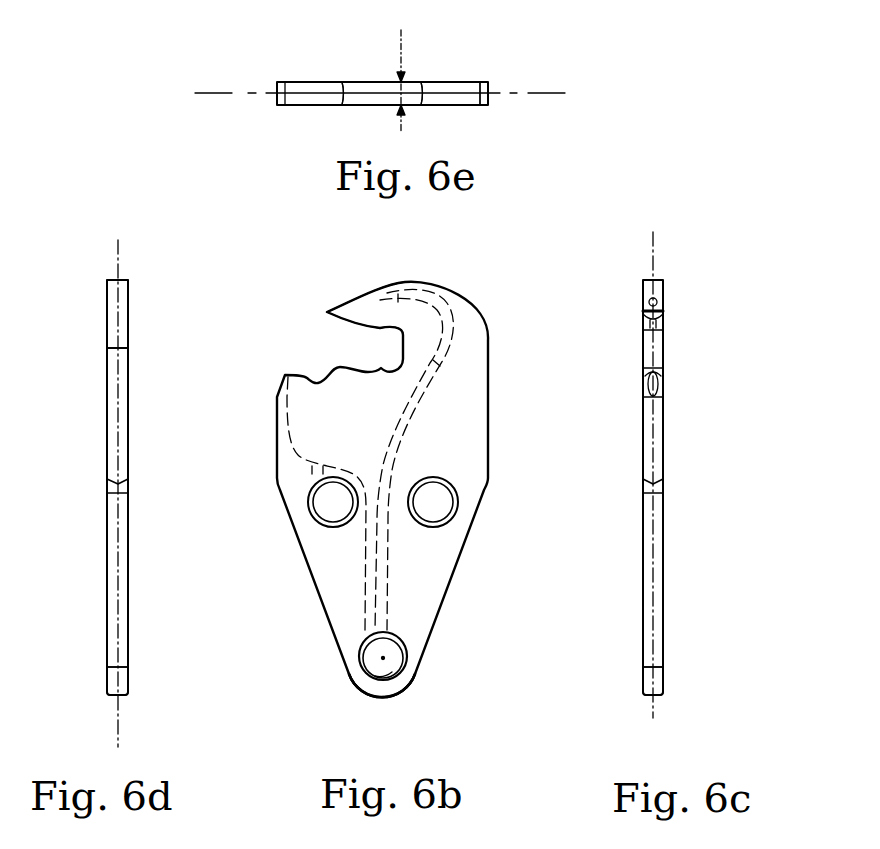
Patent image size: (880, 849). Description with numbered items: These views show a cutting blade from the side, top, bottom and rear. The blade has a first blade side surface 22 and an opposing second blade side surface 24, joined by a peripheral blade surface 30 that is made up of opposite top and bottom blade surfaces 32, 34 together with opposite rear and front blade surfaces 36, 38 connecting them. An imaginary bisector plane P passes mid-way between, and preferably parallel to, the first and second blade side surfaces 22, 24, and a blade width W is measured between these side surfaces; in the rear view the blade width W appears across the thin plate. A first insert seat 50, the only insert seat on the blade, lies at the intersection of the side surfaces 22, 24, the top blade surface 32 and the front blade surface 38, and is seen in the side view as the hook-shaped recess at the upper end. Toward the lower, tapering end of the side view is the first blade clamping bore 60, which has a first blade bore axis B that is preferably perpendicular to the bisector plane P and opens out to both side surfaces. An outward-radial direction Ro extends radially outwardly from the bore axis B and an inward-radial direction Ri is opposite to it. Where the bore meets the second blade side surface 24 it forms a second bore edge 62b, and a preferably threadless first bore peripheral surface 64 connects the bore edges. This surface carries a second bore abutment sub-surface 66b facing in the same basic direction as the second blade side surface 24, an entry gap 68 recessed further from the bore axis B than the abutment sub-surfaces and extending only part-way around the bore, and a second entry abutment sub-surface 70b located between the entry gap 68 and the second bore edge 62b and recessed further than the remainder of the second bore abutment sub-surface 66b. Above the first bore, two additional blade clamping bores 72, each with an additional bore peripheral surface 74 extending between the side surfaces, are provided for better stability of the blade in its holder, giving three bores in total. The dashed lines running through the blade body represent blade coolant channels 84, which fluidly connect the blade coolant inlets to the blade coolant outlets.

In FIG. 6E, the first blade side surface 22 is at (445, 105).
In FIG. 6D, the first blade side surface 22 is at (128, 400).
In FIG. 6C, the first blade side surface 22 is at (643, 452).
In FIG. 6E, the second blade side surface 24 is at (450, 82).
In FIG. 6D, the second blade side surface 24 is at (108, 396).
In FIG. 6C, the second blade side surface 24 is at (665, 464).
In FIG. 6B, the second blade side surface 24 is at (455, 320).
In FIG. 6D, the peripheral blade surface 30 is at (128, 238).
In FIG. 6C, the peripheral blade surface 30 is at (663, 240).
In FIG. 6C, the top blade surface 32 is at (660, 432).
In FIG. 6D, the bottom blade surface 34 is at (122, 432).
In FIG. 6E, the rear blade surface 36 is at (362, 88).
In FIG. 6D, the rear blade surface 36 is at (122, 697).
In FIG. 6C, the rear blade surface 36 is at (663, 692).
In FIG. 6D, the front blade surface 38 is at (112, 280).
In FIG. 6C, the front blade surface 38 is at (662, 282).
In FIG. 6B, the first insert seat 50 is at (312, 332).
In FIG. 6B, the first blade clamping bore 60 is at (417, 636).
In FIG. 6B, the second bore edge 62b is at (400, 638).
In FIG. 6B, the first bore peripheral surface 64 is at (372, 650).
In FIG. 6B, the second bore abutment sub-surface 66b is at (370, 674).
In FIG. 6B, the entry gap 68 is at (393, 685).
In FIG. 6B, the second entry abutment sub-surface 70b is at (392, 672).
In FIG. 6B, the additional blade clamping bore 72 is at (460, 468).
In FIG. 6B, the additional bore peripheral surface 74 is at (458, 494).
In FIG. 6B, the blade coolant channels 84 is at (297, 478).
In FIG. 6E, the imaginary bisector plane P is at (214, 93).
In FIG. 6D, the imaginary bisector plane P is at (120, 262).
In FIG. 6C, the imaginary bisector plane P is at (653, 250).
In FIG. 6E, the blade width W is at (401, 48).
In FIG. 6B, the first blade bore axis B is at (383, 660).
In FIG. 6B, the outward-radial direction Ro is at (238, 573).
In FIG. 6B, the inward-radial direction Ri is at (248, 578).